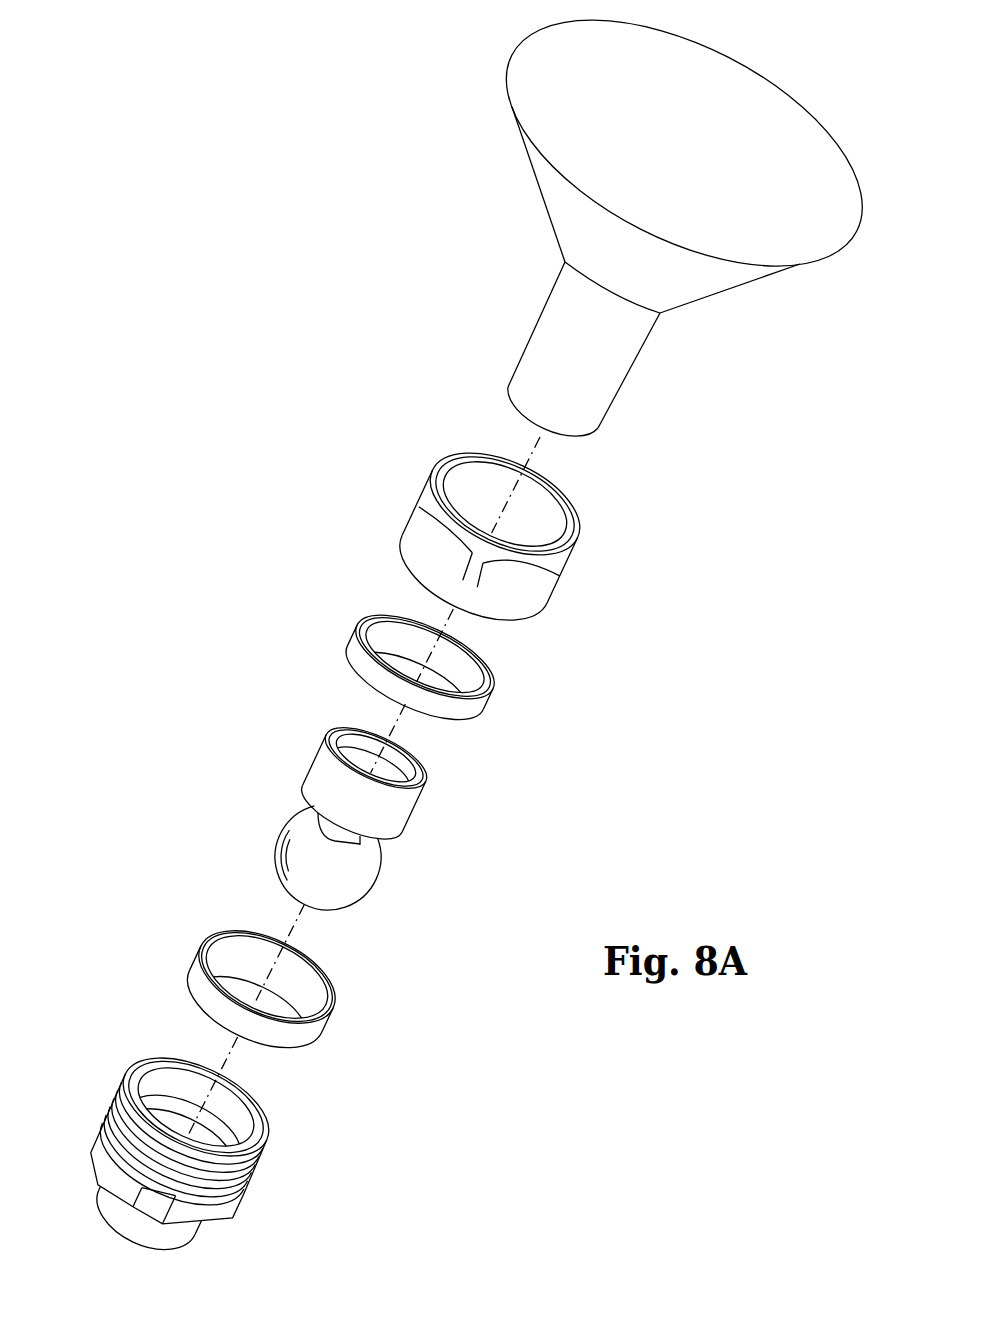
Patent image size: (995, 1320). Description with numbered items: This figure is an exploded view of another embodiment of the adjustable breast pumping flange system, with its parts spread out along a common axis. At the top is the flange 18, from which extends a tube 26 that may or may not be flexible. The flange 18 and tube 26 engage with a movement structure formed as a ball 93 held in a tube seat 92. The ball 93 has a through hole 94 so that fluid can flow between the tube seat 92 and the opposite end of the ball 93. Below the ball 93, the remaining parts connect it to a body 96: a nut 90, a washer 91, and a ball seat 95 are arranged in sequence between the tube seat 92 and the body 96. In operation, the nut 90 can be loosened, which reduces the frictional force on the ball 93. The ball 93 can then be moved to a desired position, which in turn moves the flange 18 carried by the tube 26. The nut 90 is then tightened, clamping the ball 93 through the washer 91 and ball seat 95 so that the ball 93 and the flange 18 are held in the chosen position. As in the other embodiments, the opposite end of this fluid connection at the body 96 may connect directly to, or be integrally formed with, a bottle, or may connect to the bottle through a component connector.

The flange 18 is at (533, 167).
The tube 26 is at (529, 340).
The nut 90 is at (416, 517).
The washer 91 is at (377, 614).
The tube seat 92 is at (347, 727).
The ball 93 is at (273, 858).
The through hole 94 is at (345, 847).
The ball seat 95 is at (197, 995).
The body 96 is at (100, 1127).